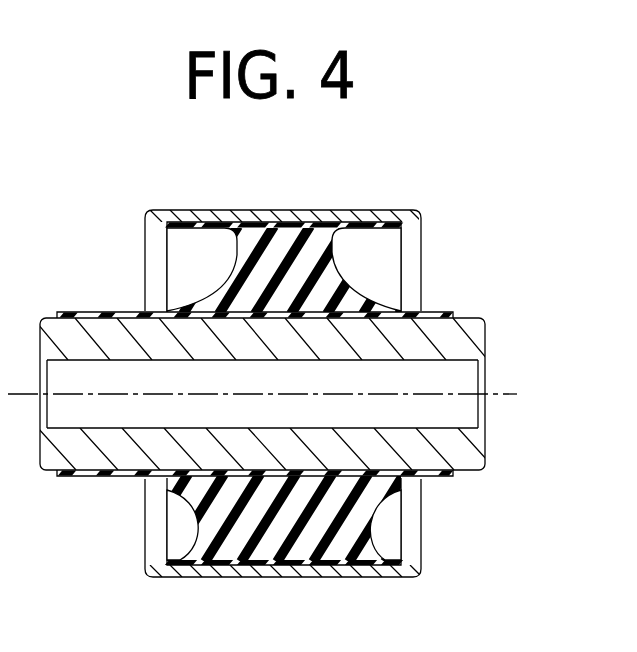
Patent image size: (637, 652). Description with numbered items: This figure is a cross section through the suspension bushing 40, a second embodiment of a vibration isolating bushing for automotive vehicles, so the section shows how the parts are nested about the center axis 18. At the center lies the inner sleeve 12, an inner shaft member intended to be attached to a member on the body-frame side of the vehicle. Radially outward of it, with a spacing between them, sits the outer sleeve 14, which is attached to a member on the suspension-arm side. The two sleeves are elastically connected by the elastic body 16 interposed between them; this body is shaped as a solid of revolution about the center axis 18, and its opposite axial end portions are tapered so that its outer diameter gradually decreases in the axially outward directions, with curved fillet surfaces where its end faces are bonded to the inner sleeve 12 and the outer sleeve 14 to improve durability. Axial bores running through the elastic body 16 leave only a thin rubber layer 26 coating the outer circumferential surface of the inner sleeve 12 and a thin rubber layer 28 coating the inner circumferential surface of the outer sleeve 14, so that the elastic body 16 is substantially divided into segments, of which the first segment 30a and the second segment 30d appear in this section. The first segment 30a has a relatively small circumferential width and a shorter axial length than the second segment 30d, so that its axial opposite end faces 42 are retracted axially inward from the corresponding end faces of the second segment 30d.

The inner sleeve 12 is at (457, 342).
The outer sleeve 14 is at (202, 573).
The elastic body 16 is at (312, 582).
The center axis 18 is at (500, 390).
The thin rubber layer 26 is at (102, 477).
The thin rubber layer 28 is at (370, 226).
The first segment 30a is at (275, 268).
The second segment 30d is at (283, 523).
The suspension bushing 40 is at (463, 158).
The axial opposite end face 42 is at (237, 266).